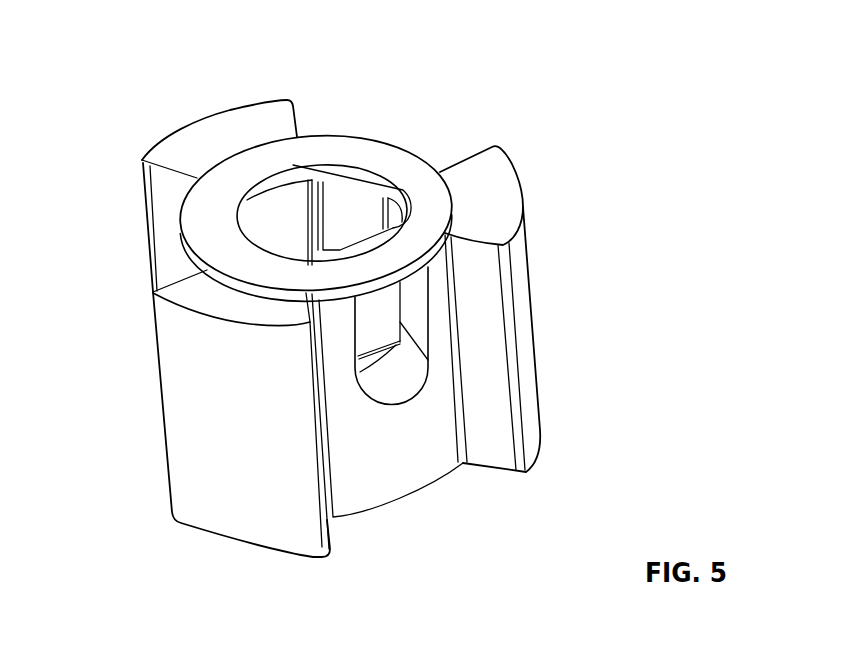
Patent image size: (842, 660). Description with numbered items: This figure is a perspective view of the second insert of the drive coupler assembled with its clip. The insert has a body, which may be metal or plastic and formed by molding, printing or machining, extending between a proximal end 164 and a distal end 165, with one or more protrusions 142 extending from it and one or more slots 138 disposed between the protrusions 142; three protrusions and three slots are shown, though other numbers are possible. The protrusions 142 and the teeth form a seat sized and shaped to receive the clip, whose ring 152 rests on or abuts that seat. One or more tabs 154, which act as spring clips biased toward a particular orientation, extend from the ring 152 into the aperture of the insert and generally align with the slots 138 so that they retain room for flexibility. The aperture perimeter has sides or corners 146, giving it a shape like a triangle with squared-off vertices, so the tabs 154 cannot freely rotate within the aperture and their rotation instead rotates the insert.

The slot 138 is at (380, 385).
The protrusion 142 is at (337, 352).
The corner 146 is at (295, 200).
The ring 152 is at (388, 163).
The tab 154 is at (380, 308).
The proximal end 164 is at (520, 173).
The distal end 165 is at (527, 473).